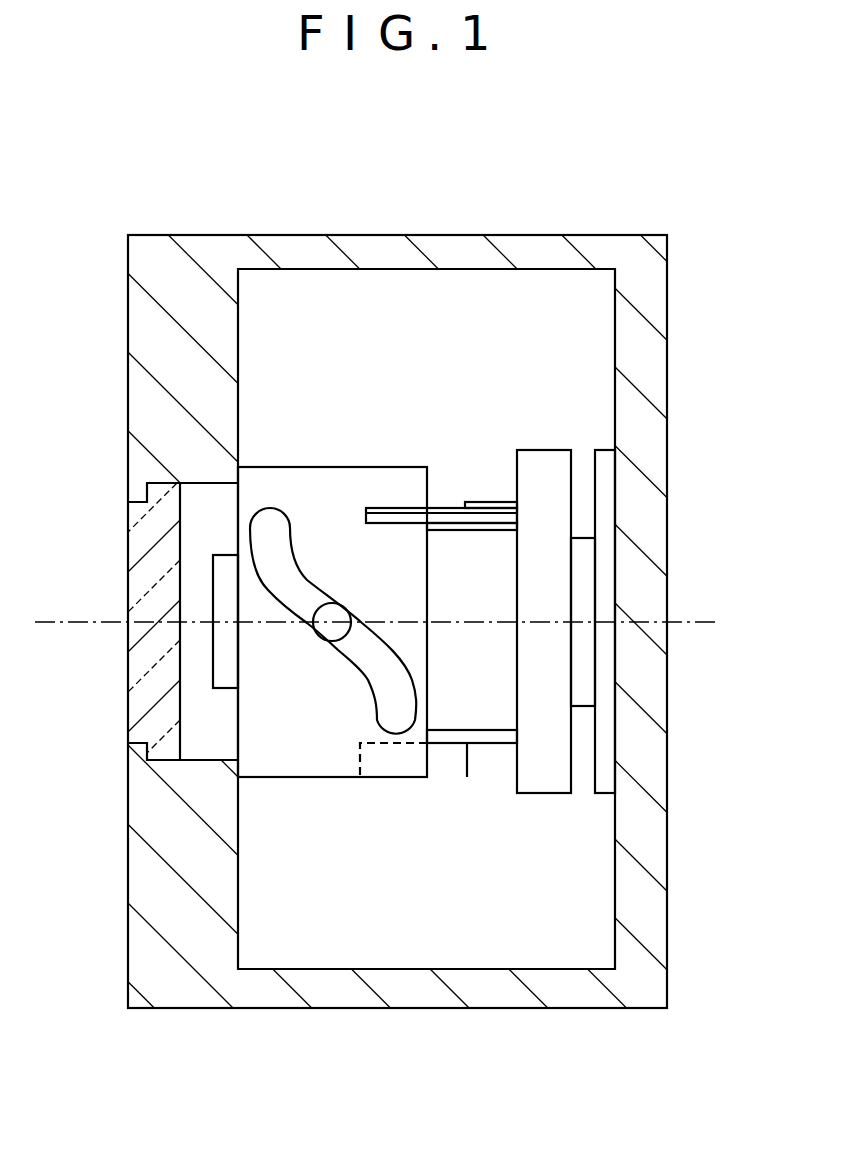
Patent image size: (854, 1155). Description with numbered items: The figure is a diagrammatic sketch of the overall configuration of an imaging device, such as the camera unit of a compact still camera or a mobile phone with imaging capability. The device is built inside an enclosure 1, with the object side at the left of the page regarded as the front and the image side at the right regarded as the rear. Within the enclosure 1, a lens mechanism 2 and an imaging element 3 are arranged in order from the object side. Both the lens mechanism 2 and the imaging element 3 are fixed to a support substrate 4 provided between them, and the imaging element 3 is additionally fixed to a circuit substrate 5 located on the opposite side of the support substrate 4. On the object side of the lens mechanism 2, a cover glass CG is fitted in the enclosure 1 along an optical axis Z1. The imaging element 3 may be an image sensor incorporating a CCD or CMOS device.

The enclosure 1 is at (643, 1000).
The lens mechanism 2 is at (305, 790).
The imaging element 3 is at (577, 687).
The support substrate 4 is at (552, 503).
The circuit substrate 5 is at (603, 497).
The cover glass CG is at (150, 550).
The optical axis Z1 is at (77, 624).